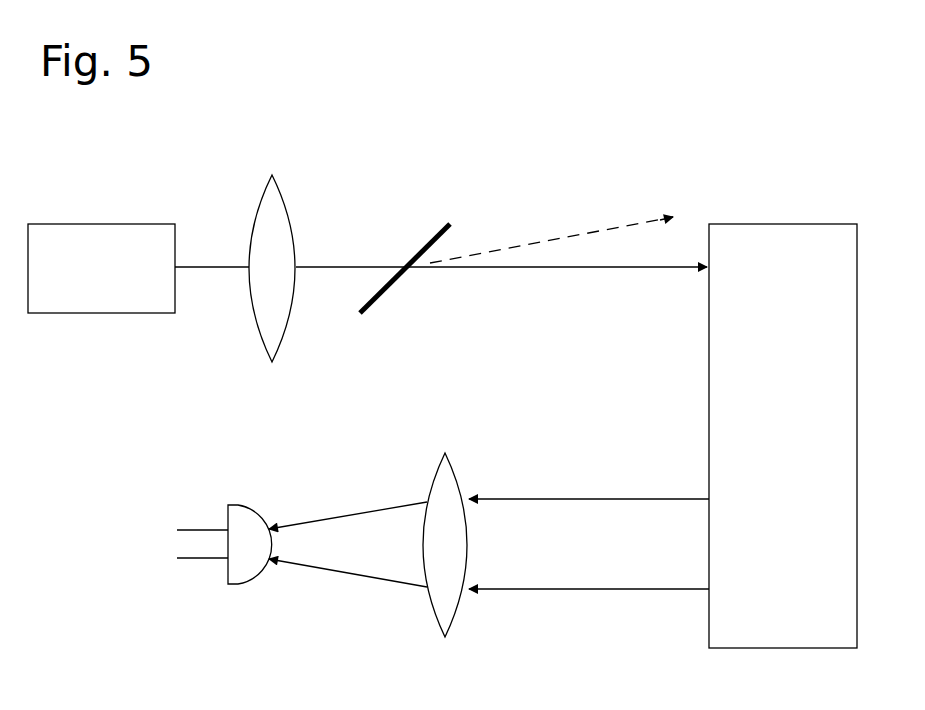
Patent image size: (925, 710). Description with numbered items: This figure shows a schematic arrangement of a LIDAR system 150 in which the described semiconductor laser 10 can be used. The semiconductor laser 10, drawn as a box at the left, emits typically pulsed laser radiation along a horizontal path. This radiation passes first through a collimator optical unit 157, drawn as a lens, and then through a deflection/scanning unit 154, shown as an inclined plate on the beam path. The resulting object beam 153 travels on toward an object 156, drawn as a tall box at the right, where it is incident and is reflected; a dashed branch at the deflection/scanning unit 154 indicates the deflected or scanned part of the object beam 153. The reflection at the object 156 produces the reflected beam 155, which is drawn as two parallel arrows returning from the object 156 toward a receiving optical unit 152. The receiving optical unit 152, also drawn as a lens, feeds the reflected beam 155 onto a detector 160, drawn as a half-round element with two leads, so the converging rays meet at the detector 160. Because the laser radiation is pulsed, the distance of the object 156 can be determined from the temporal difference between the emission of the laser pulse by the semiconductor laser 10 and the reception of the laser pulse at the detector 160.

The LIDAR system 150 is at (388, 134).
The semiconductor laser 10 is at (102, 236).
The collimator optical unit 157 is at (270, 205).
The object beam 153 is at (607, 229).
The deflection/scanning unit 154 is at (436, 228).
The object 156 is at (789, 240).
The reflected beam 155 is at (598, 590).
The receiving optical unit 152 is at (447, 603).
The detector 160 is at (244, 572).